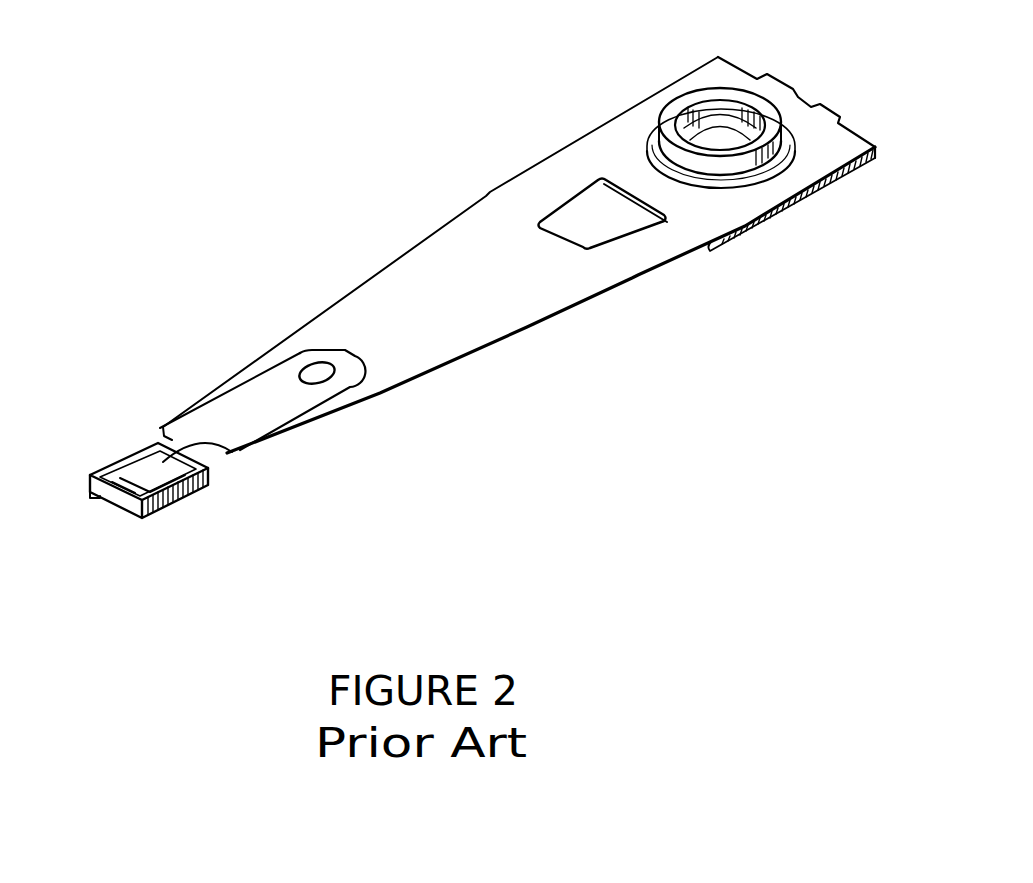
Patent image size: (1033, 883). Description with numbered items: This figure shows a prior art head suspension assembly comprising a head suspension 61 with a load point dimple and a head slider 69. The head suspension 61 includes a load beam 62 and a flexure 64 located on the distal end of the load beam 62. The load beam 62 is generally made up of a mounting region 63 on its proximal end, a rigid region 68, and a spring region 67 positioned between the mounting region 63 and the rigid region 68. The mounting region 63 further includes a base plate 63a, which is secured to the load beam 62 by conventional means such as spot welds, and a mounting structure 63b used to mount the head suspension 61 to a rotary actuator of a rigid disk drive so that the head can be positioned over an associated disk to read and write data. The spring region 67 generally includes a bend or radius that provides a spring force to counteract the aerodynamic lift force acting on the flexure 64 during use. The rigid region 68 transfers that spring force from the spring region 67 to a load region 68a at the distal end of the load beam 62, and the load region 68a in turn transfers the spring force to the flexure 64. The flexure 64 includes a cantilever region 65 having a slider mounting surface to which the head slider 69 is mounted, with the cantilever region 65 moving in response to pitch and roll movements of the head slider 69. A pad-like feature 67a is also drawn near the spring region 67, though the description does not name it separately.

The head suspension 61 is at (574, 78).
The load beam 62 is at (517, 312).
The mounting region 63 is at (705, 217).
The base plate 63a is at (837, 182).
The mounting structure 63b is at (780, 130).
The flexure 64 is at (290, 386).
The cantilever region 65 is at (112, 497).
The spring region 67 is at (550, 200).
The pad edge 67a is at (603, 216).
The rigid region 68 is at (390, 285).
The load region 68a is at (243, 455).
The head slider 69 is at (177, 500).